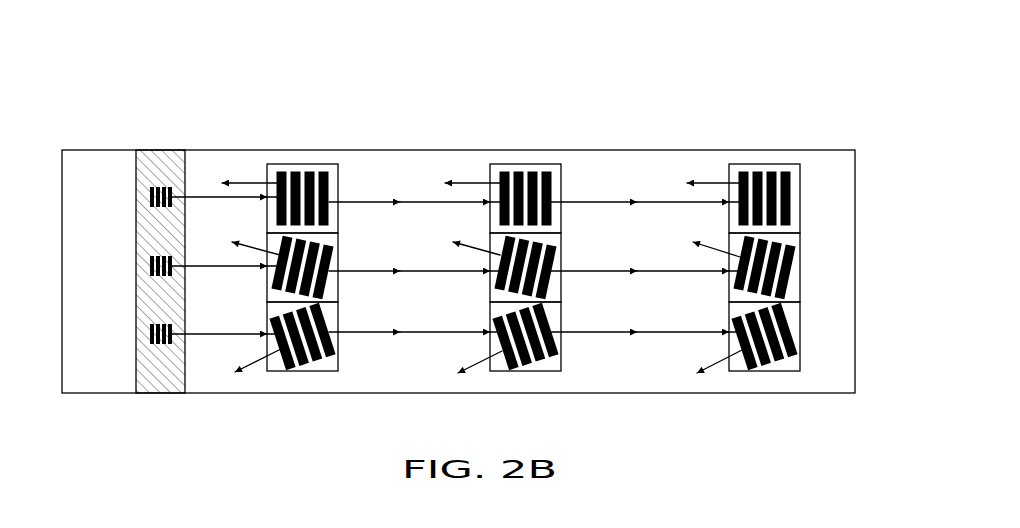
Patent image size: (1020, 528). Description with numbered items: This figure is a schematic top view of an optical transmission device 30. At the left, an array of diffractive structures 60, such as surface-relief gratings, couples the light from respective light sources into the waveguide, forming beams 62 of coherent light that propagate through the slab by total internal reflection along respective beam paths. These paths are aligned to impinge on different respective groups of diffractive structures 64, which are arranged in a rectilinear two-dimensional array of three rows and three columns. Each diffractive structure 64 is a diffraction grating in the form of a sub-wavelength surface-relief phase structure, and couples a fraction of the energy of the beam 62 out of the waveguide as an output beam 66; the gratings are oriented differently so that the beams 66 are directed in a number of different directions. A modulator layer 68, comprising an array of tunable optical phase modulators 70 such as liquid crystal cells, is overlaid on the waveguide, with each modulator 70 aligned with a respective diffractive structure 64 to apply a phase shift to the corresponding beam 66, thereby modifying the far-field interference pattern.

The optical transmission device 30 is at (803, 121).
The diffractive structure 60 is at (150, 197).
The beam 62 is at (603, 200).
The diffractive structure 64 is at (788, 176).
The beam 66 is at (254, 182).
The modulator layer 68 is at (848, 384).
The tunable optical phase modulator 70 is at (800, 189).